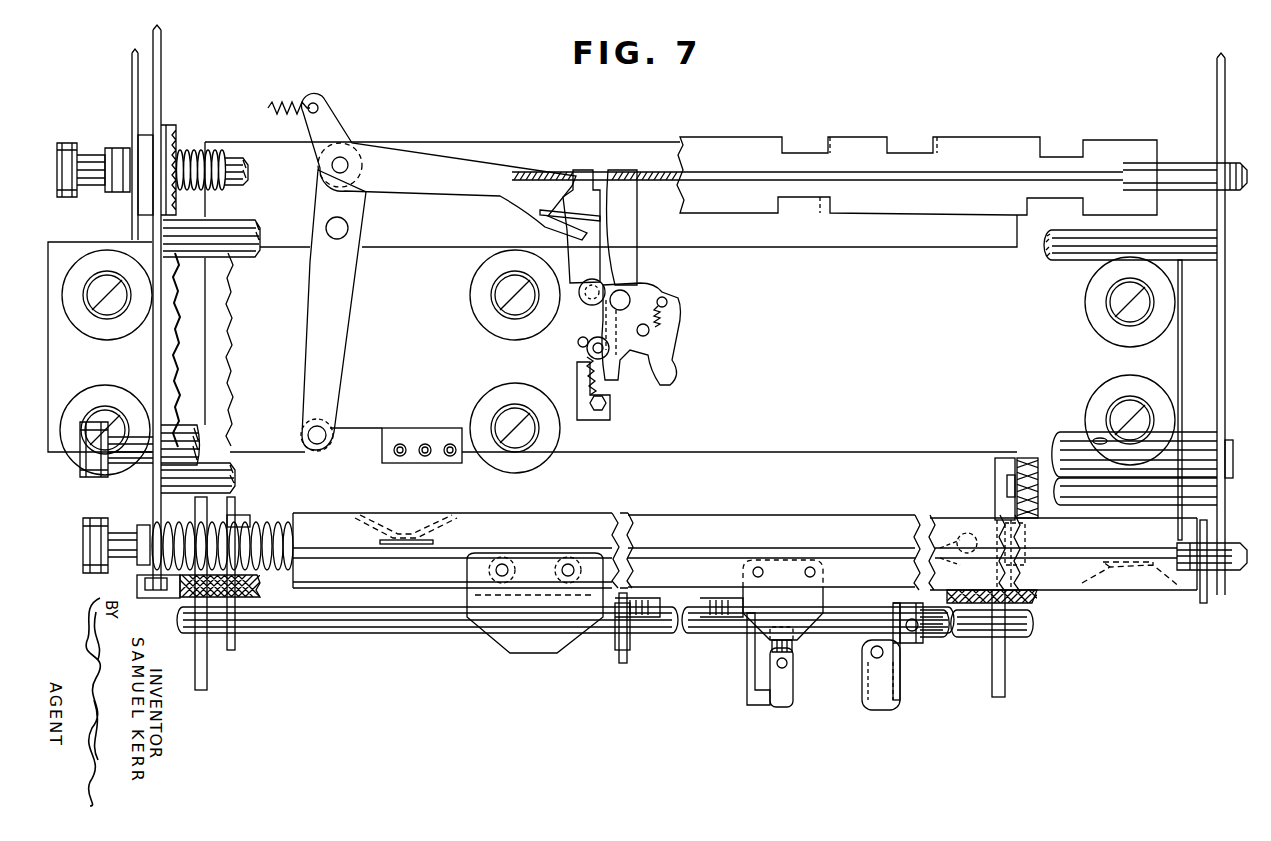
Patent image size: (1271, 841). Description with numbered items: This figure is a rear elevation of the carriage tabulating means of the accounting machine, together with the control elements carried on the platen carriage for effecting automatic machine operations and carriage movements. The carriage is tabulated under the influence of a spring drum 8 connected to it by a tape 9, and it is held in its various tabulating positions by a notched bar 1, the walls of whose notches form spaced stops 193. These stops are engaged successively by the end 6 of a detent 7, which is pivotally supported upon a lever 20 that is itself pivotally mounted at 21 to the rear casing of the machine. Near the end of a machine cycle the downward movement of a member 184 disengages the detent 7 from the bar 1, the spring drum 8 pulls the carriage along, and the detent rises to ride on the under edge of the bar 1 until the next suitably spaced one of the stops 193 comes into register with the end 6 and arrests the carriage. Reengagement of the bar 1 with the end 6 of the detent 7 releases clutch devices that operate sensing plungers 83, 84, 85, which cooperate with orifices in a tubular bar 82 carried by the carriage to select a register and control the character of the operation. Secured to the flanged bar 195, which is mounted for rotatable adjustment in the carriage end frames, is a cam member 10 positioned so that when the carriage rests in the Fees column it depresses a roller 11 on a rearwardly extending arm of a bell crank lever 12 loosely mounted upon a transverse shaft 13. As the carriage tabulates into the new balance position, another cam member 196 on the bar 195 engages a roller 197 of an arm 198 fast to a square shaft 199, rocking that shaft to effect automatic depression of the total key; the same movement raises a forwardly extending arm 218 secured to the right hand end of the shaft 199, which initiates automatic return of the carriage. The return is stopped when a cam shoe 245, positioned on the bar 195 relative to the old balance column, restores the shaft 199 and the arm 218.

The notched bar 1 is at (748, 147).
The end of detent 6 is at (575, 170).
The detent 7 is at (450, 160).
The spring drum 8 is at (1022, 460).
The tape 9 is at (248, 597).
The cam member 10 is at (805, 625).
The roller 11 is at (793, 662).
The bell crank lever 12 is at (750, 655).
The transverse shaft 13 is at (700, 640).
The lever 20 is at (358, 282).
The pivot 21 is at (326, 229).
The tubular bar 82 is at (1060, 440).
The sensing plunger 83 is at (393, 450).
The sensing plunger 84 is at (423, 457).
The sensing plunger 85 is at (450, 457).
The member 184 is at (625, 270).
The stops 193 is at (878, 170).
The flanged bar 195 is at (810, 530).
The cam member 196 is at (468, 528).
The roller 197 is at (968, 532).
The arm 198 is at (925, 530).
The square shaft 199 is at (630, 528).
The arm 218 is at (230, 650).
The cam shoe 245 is at (1105, 572).